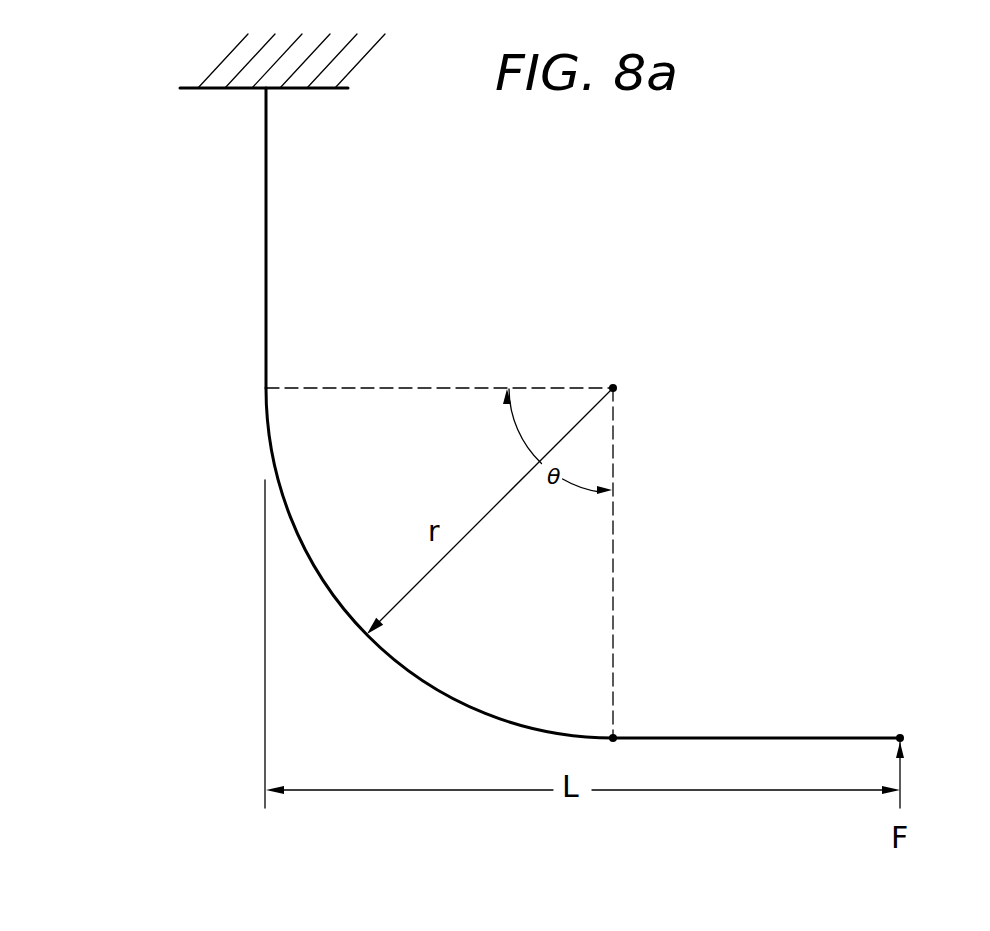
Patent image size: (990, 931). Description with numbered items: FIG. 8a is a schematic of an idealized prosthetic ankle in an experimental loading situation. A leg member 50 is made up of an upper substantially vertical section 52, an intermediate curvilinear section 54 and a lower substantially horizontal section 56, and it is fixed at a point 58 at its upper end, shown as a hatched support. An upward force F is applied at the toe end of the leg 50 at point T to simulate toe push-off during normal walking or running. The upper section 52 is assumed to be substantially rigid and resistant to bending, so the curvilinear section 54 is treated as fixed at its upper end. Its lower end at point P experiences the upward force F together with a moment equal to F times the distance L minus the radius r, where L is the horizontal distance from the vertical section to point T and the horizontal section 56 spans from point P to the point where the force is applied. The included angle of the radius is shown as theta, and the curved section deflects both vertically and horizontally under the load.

The leg member 50 is at (521, 413).
The upper substantially vertical section 52 is at (266, 248).
The intermediate curvilinear section 54 is at (396, 657).
The lower substantially horizontal section 56 is at (783, 736).
The fixed point 58 is at (267, 90).
The point P is at (614, 734).
The point T is at (901, 714).